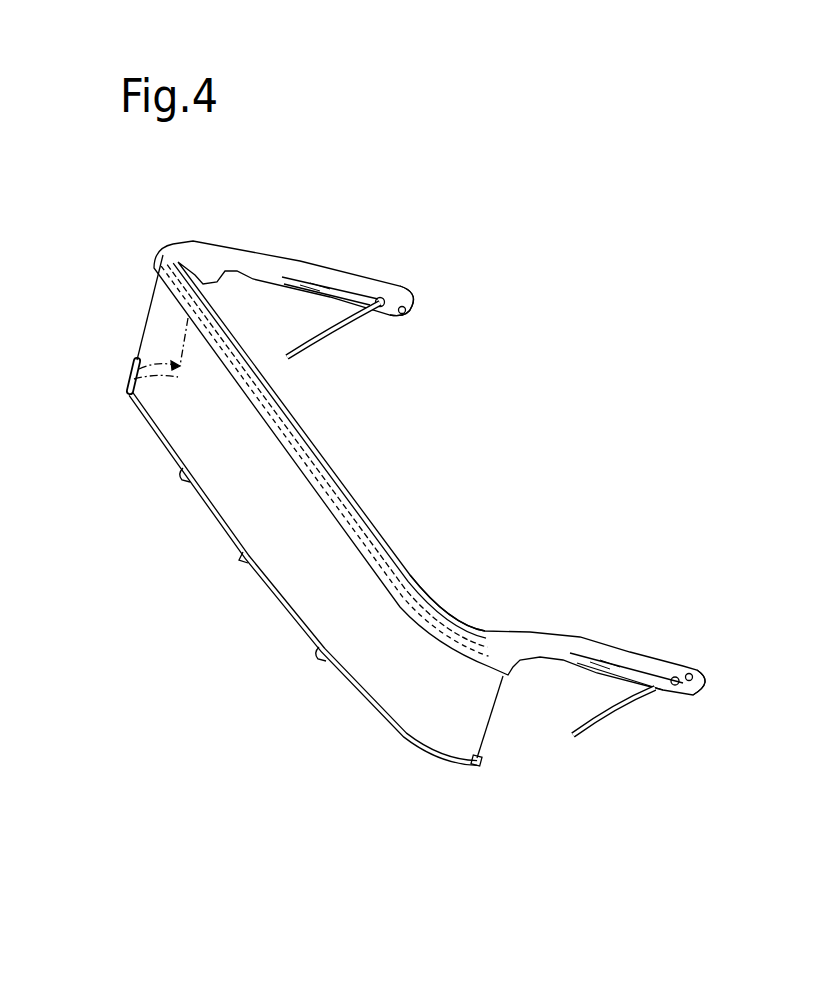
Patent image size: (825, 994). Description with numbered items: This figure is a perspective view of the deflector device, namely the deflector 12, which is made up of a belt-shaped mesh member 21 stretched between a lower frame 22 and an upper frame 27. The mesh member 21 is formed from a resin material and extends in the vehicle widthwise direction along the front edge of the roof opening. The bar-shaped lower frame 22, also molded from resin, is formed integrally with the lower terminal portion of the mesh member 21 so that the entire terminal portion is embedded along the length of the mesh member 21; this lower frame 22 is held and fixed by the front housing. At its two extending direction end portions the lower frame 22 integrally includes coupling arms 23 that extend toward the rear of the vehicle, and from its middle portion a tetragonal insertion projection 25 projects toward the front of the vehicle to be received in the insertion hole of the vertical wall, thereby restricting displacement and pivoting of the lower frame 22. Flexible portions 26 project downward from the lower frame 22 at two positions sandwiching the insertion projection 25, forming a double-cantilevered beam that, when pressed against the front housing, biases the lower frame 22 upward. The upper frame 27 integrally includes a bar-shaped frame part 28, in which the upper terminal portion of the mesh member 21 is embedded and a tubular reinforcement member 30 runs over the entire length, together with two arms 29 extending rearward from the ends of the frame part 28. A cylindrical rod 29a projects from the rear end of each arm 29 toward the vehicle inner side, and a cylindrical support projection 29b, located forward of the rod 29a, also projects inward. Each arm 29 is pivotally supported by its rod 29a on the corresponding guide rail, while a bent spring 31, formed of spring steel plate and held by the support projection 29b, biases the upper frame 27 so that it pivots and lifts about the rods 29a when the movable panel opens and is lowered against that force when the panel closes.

The deflector 12 is at (413, 566).
The mesh member 21 is at (479, 733).
The lower frame 22 is at (353, 689).
The coupling arm 23 is at (179, 382).
The insertion projection 25 is at (245, 563).
The flexible portion 26 is at (183, 479).
The upper frame 27 is at (339, 473).
The frame part 28 is at (290, 413).
The arm 29 is at (322, 261).
The rod 29a is at (416, 317).
The support projection 29b is at (390, 323).
The reinforcement member 30 is at (481, 623).
The bent spring 31 is at (350, 332).